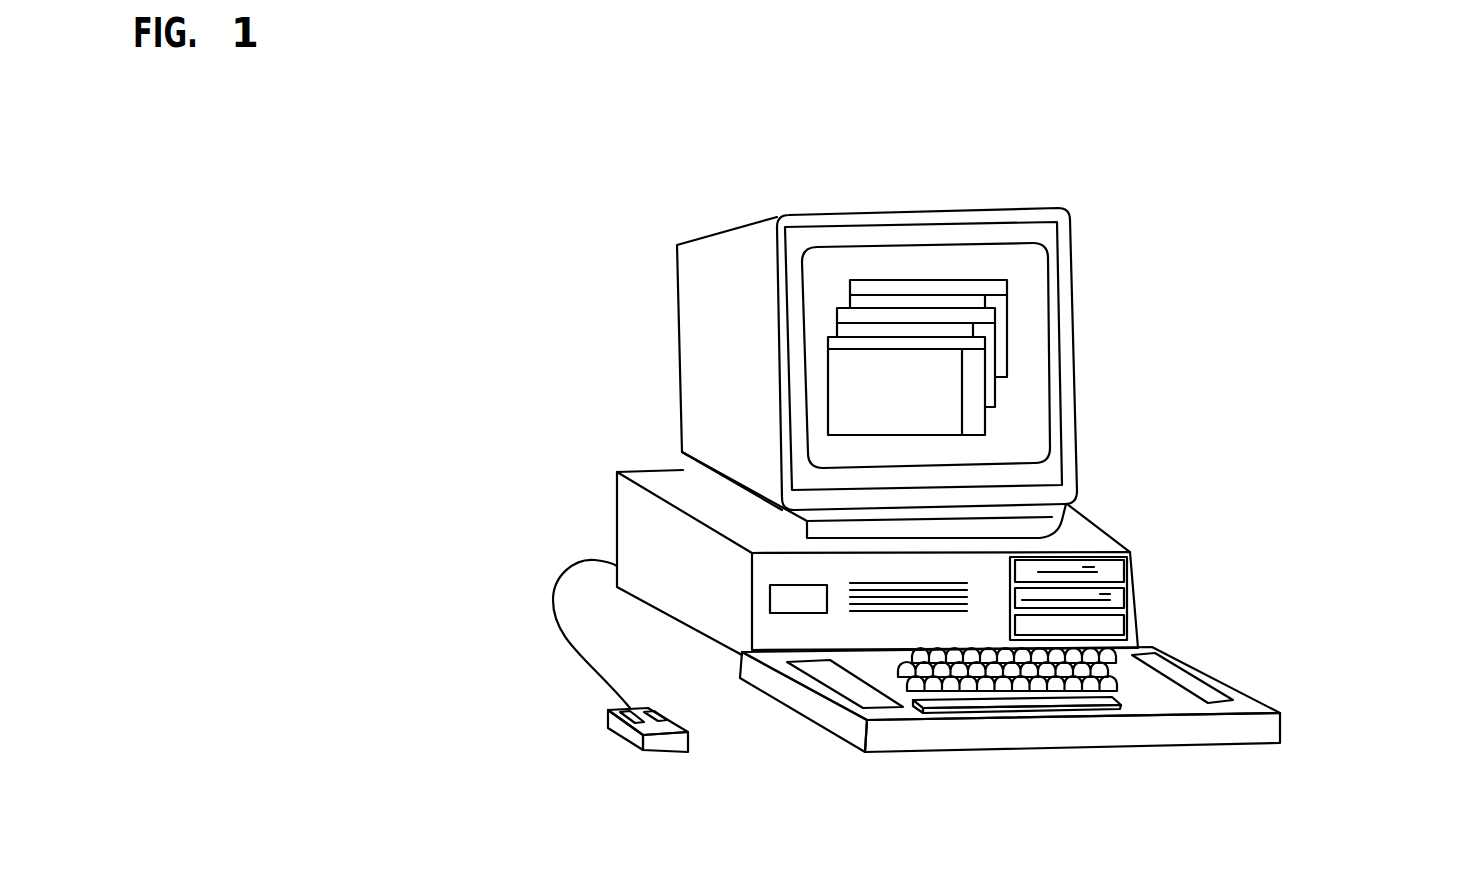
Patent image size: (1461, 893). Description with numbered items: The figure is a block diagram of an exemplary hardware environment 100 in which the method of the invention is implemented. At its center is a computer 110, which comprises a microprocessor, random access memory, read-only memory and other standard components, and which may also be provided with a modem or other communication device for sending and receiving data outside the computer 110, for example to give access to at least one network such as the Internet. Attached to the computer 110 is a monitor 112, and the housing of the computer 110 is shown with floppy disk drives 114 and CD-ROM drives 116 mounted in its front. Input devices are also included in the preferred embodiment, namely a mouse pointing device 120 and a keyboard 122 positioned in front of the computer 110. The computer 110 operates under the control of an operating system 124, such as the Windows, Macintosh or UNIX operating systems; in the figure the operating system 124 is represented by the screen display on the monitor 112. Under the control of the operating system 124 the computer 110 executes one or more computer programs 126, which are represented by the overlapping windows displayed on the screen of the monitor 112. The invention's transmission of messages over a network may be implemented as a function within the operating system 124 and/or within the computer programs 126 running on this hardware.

The computer system 100 is at (1345, 177).
The computer 110 is at (1105, 532).
The monitor 112 is at (950, 212).
The floppy disk drives 114 is at (1117, 597).
The CD-ROM drives 116 is at (1117, 628).
The mouse pointing device 120 is at (608, 731).
The keyboard 122 is at (1200, 733).
The operating system 124 is at (828, 270).
The computer programs 126 is at (1030, 369).